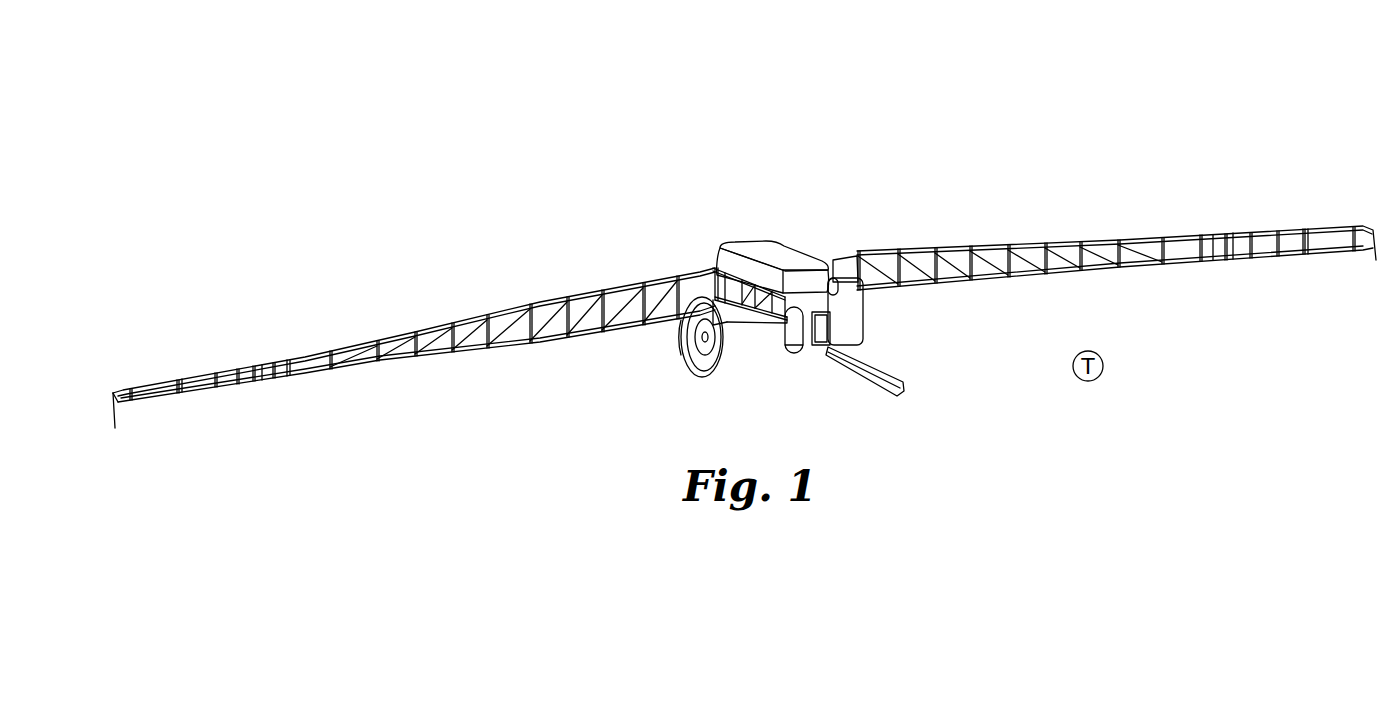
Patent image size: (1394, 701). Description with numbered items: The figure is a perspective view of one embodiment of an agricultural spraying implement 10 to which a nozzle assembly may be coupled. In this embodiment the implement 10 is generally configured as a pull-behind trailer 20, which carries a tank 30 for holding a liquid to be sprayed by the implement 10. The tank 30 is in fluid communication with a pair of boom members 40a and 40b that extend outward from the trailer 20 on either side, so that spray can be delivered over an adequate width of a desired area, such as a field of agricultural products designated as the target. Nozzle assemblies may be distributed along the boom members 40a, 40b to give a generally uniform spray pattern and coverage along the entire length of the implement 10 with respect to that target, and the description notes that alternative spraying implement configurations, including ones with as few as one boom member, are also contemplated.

The agricultural spraying implement 10 is at (801, 140).
The pull-behind trailer 20 is at (742, 326).
The tank 30 is at (733, 238).
The boom member 40a is at (412, 330).
The boom member 40b is at (1065, 243).